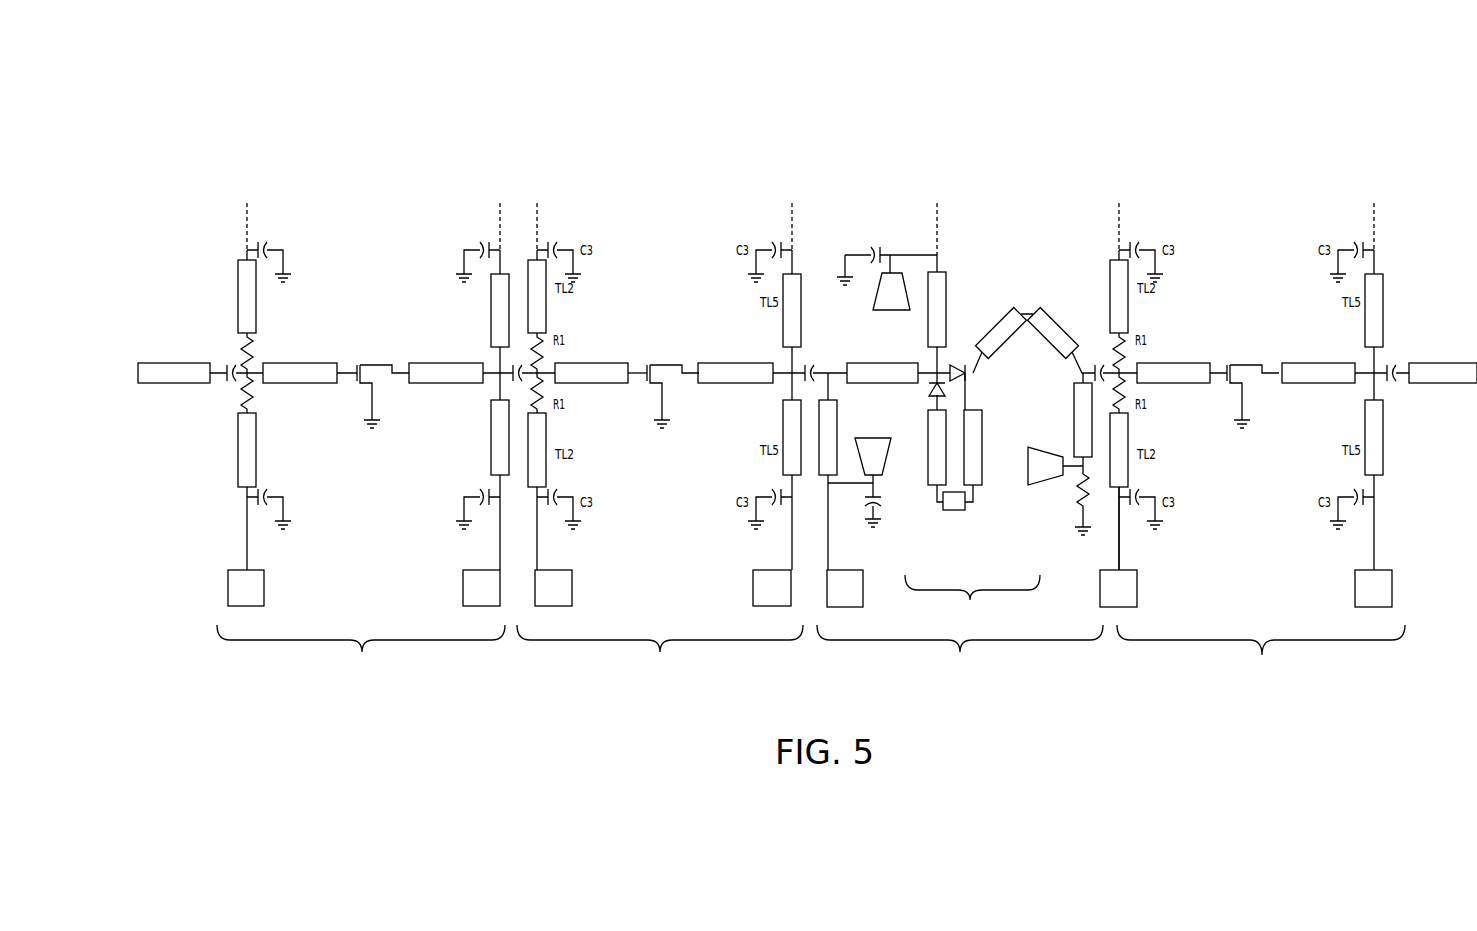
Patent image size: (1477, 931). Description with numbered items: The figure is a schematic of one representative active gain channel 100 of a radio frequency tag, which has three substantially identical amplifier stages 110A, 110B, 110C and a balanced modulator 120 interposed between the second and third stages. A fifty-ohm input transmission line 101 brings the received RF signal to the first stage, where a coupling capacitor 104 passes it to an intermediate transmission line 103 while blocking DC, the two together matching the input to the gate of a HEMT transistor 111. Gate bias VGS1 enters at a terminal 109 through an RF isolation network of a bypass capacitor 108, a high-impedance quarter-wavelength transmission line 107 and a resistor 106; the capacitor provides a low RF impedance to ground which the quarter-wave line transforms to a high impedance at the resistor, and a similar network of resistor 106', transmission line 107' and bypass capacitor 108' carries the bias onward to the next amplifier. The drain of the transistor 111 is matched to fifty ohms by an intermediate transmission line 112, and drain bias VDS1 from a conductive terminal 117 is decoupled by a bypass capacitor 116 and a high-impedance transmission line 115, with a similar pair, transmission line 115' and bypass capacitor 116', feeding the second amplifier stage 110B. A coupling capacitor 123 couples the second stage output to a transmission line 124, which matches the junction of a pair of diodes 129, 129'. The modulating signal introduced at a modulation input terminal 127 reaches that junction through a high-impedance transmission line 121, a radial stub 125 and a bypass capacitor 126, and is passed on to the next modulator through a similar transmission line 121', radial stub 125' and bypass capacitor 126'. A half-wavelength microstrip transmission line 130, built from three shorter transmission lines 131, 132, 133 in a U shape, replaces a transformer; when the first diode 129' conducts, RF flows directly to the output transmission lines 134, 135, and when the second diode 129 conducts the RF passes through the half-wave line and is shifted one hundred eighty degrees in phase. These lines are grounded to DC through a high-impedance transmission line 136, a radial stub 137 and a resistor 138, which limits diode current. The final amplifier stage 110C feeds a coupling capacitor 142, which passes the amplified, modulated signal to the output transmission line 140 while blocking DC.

The active gain channel 100 is at (1333, 152).
The input transmission line 101 is at (196, 367).
The intermediate transmission line 103 is at (298, 366).
The coupling capacitor 104 is at (221, 393).
The resistor 106 is at (300, 415).
The resistor 106' is at (297, 308).
The high-impedance quarter-wavelength transmission line 107 is at (209, 463).
The high-impedance transmission line 107' is at (199, 254).
The bypass capacitor 108 is at (315, 494).
The bypass capacitor 108' is at (287, 207).
The terminal 109 is at (230, 587).
The first amplifier stage 110A is at (361, 658).
The second amplifier stage 110B is at (660, 658).
The third amplifier stage 110C is at (1261, 659).
The High Electron Mobility Transistor 111 is at (371, 358).
The intermediate transmission line 112 is at (422, 383).
The high-impedance transmission line 115 is at (468, 437).
The high-impedance transmission line 115' is at (462, 310).
The bypass capacitor 116 is at (416, 534).
The bypass capacitor 116' is at (470, 203).
The conductive terminal 117 is at (466, 593).
The balanced modulator 120 is at (960, 658).
The high-impedance transmission line 121 is at (777, 442).
The high-impedance transmission line 121' is at (962, 273).
The coupling capacitor 123 is at (810, 358).
The transmission line 124 is at (893, 278).
The radial stub 125 is at (871, 504).
The radial stub 125' is at (915, 225).
The bypass capacitor 126 is at (910, 538).
The bypass capacitor 126' is at (881, 210).
The modulation input terminal 127 is at (845, 600).
The second diode 129 is at (892, 409).
The first diode 129' is at (1004, 374).
The half-wavelength microstrip transmission line 130 is at (972, 605).
The transmission line 131 is at (930, 487).
The transmission line 132 is at (968, 512).
The transmission line 133 is at (978, 487).
The output transmission line 134 is at (1003, 322).
The output transmission line 135 is at (1050, 305).
The high-impedance transmission line 136 is at (1076, 425).
The radial stub 137 is at (1040, 475).
The resistor 138 is at (1100, 505).
The output transmission line 140 is at (1443, 383).
The coupling capacitor 142 is at (1408, 337).